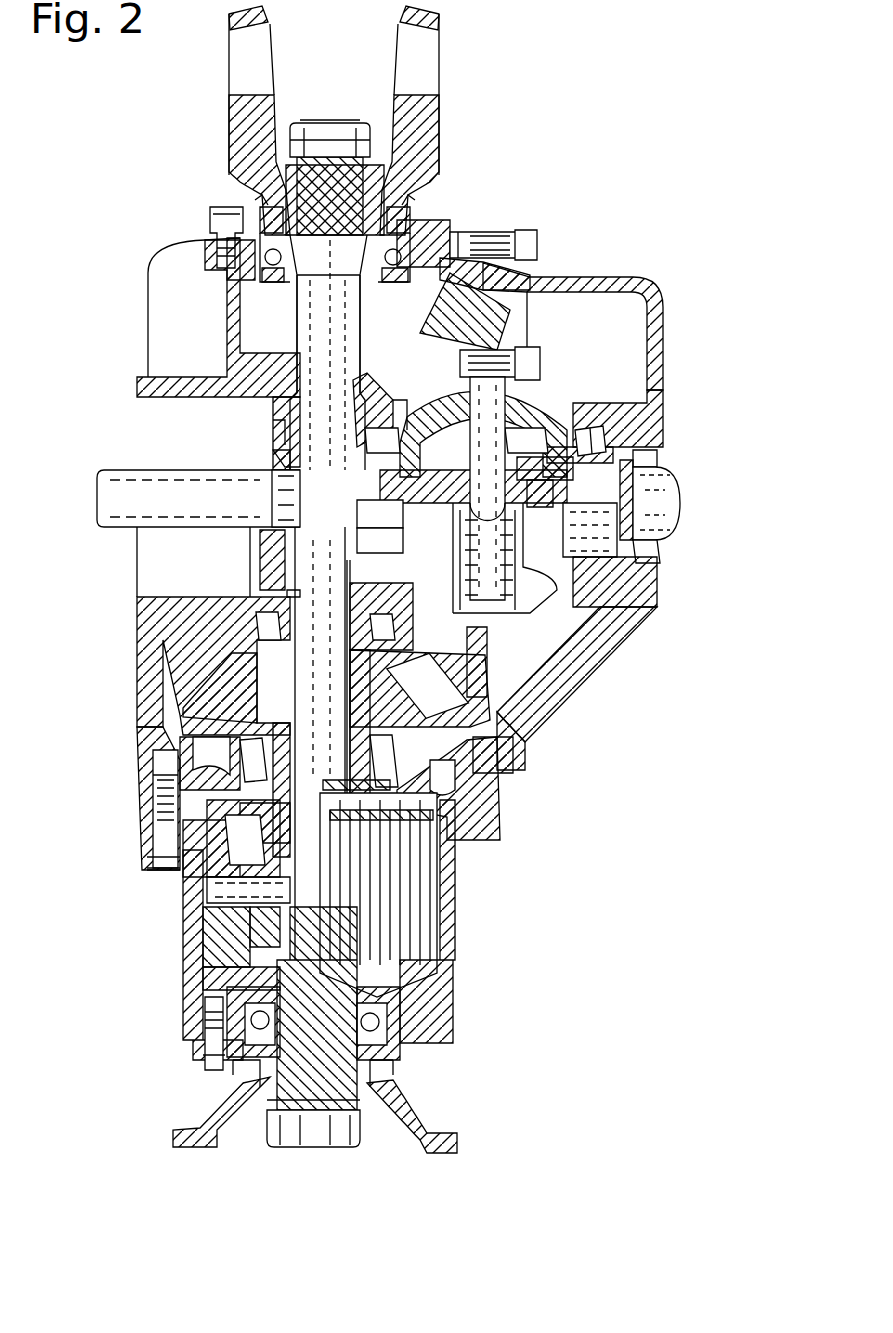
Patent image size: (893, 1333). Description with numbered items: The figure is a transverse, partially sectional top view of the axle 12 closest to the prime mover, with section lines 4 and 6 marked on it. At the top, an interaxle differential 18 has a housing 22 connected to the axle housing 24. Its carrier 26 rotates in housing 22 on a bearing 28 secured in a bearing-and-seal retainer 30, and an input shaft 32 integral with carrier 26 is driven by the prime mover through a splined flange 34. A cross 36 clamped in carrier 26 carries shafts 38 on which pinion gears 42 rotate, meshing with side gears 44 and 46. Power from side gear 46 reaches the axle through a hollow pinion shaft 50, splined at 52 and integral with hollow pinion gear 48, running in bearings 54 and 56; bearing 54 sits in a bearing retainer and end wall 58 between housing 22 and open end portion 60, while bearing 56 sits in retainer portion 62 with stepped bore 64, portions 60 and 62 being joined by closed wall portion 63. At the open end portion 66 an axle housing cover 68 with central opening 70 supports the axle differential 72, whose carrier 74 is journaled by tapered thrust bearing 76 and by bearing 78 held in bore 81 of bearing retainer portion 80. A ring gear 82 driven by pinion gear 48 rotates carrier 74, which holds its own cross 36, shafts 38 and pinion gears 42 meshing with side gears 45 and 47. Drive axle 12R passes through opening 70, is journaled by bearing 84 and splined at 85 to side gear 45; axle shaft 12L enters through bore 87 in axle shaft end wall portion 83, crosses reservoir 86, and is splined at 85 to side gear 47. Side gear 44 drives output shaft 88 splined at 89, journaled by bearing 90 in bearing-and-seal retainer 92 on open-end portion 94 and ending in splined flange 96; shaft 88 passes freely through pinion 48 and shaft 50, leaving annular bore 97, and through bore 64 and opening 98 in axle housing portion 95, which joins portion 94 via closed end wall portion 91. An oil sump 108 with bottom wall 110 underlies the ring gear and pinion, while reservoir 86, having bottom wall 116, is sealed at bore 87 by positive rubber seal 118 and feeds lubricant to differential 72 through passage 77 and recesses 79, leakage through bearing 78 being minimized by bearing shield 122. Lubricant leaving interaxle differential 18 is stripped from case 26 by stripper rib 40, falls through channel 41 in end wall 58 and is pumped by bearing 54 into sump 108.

The axle 12 is at (82, 180).
The axle shaft 12L is at (97, 498).
The drive axle 12R is at (662, 507).
The interaxle differential 18 is at (458, 957).
The housing 22 is at (455, 935).
The axle housing 24 is at (135, 620).
The carrier 26 is at (195, 975).
The bearing 28 is at (380, 1024).
The bearing-and-seal retainer 30 is at (420, 1060).
The input shaft 32 is at (300, 1083).
The splined flange 34 is at (392, 1133).
The cross 36 is at (300, 888).
The shafts 38 is at (510, 350).
The stripper rib 40 is at (205, 862).
The channel 41 is at (215, 778).
The pinion gear 42 is at (540, 405).
The side gear 44 is at (327, 937).
The side gear 45 is at (545, 490).
The side gear 46 is at (180, 833).
The side gear 47 is at (428, 507).
The hollow pinion gear 48 is at (232, 685).
The hollow pinion shaft 50 is at (280, 845).
The spline 52 is at (235, 815).
The bearing 54 is at (372, 757).
The bearing 56 is at (253, 608).
The bearing retainer and end wall 58 is at (483, 823).
The open end portion 60 is at (158, 810).
The retainer portion 62 is at (210, 600).
The closed wall portion 63 is at (150, 690).
The stepped bore 64 is at (360, 592).
The open end portion 66 is at (517, 748).
The axle housing cover 68 is at (663, 400).
The central opening 70 is at (660, 434).
The axle differential 72 is at (546, 598).
The carrier 74 is at (505, 558).
The tapered thrust bearing 76 is at (595, 426).
The passage 77 is at (380, 512).
The bearing 78 is at (380, 537).
The recesses 79 is at (420, 425).
The bearing retainer portion 80 is at (380, 372).
The bore 81 is at (402, 398).
The ring gear 82 is at (437, 310).
The axle shaft end wall portion 83 is at (263, 557).
The bearing 84 is at (660, 553).
The splines 85 is at (445, 497).
The reservoir 86 is at (285, 427).
The bore 87 is at (273, 465).
The output shaft 88 is at (335, 724).
The spline 89 is at (300, 955).
The bearing 90 is at (395, 208).
The closed end wall portion 91 is at (225, 305).
The bearing-and-seal retainer 92 is at (425, 215).
The open-end portion 94 is at (240, 207).
The axle housing portion 95 is at (225, 378).
The splined flange 96 is at (420, 125).
The annular bore 97 is at (347, 665).
The opening 98 is at (295, 378).
The oil sump 108 is at (587, 305).
The bottom wall 110 is at (612, 322).
The bottom wall 116 is at (292, 557).
The positive rubber seal 118 is at (272, 480).
The bearing shield 122 is at (360, 567).
The section line 4- 4 is at (502, 242).
The section line 6- 6 is at (150, 803).